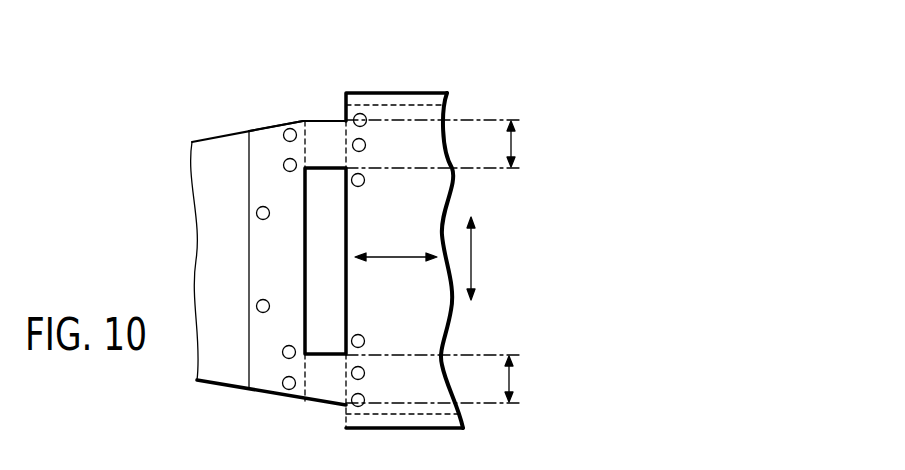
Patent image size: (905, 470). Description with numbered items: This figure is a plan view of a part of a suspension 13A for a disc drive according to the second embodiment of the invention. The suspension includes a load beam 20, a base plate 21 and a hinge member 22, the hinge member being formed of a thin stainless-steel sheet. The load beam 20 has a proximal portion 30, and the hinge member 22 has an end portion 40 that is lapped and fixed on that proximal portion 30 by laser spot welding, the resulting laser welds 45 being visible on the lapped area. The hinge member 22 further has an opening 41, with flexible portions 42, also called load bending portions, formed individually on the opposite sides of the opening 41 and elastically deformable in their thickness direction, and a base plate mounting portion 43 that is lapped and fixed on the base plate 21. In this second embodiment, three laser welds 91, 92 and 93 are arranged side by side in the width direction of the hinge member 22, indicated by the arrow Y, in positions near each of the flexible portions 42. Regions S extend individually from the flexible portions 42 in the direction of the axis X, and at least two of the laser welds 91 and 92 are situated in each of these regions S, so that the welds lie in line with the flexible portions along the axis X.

The suspension 13A is at (162, 192).
The load beam 20 is at (213, 141).
The base plate 21 is at (432, 101).
The hinge member 22 is at (356, 90).
The proximal portion 30 is at (268, 131).
The end portion 40 is at (262, 392).
The opening 41 is at (318, 255).
The flexible portions 42 is at (321, 120).
The base plate mounting portion 43 is at (440, 183).
The laser welds 45 is at (284, 138).
The laser weld 91 is at (364, 114).
The laser weld 92 is at (366, 145).
The laser weld 93 is at (362, 185).
The region S is at (517, 146).
The axis X is at (398, 254).
The arrow Y is at (476, 257).